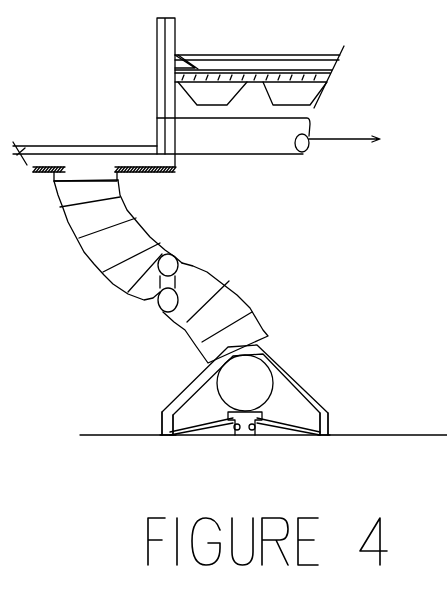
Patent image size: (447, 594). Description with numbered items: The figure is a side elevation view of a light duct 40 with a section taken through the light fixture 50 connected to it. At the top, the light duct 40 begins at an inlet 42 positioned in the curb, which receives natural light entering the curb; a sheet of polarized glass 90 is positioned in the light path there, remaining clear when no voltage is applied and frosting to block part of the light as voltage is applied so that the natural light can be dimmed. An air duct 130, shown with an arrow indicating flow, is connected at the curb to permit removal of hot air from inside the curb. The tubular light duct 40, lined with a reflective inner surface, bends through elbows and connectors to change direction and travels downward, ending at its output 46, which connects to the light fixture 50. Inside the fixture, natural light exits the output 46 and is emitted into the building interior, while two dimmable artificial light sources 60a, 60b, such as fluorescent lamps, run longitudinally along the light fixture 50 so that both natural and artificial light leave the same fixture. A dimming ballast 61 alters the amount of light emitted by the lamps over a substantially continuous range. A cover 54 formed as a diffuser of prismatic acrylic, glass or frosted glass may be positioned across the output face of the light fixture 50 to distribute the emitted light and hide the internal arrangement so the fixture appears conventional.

The polarized glass 90 is at (70, 146).
The inlet 42 is at (85, 177).
The air duct 130 is at (247, 157).
The light duct 40 is at (207, 272).
The output 46 is at (254, 349).
The light fixture 50 is at (187, 388).
The cover 54 is at (178, 433).
The dimming ballast 61 is at (274, 373).
The artificial light source 60a is at (233, 437).
The artificial light source 60b is at (260, 437).